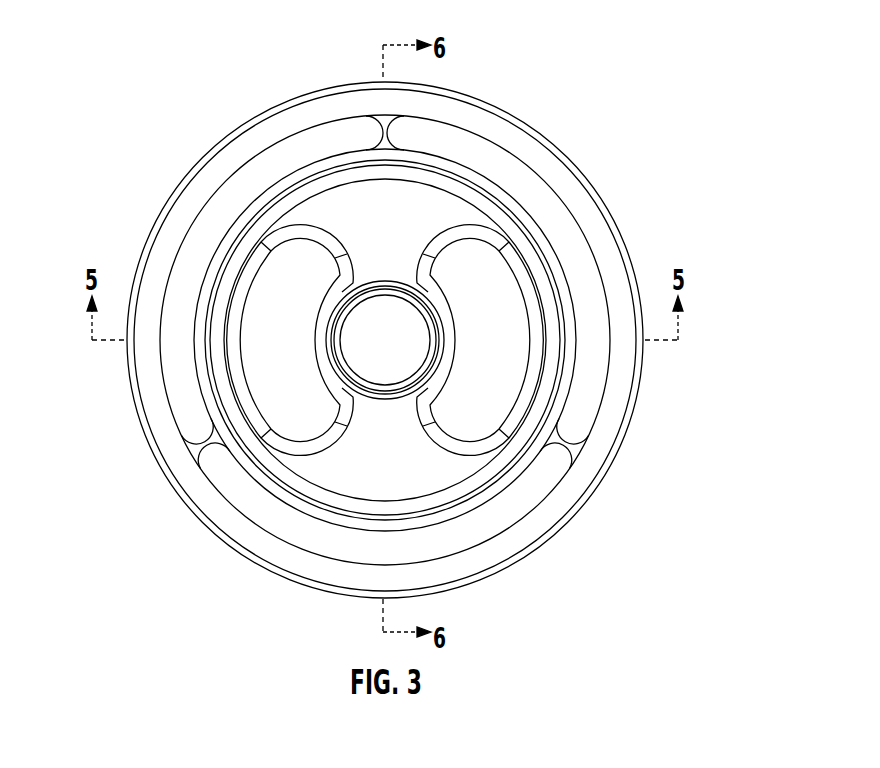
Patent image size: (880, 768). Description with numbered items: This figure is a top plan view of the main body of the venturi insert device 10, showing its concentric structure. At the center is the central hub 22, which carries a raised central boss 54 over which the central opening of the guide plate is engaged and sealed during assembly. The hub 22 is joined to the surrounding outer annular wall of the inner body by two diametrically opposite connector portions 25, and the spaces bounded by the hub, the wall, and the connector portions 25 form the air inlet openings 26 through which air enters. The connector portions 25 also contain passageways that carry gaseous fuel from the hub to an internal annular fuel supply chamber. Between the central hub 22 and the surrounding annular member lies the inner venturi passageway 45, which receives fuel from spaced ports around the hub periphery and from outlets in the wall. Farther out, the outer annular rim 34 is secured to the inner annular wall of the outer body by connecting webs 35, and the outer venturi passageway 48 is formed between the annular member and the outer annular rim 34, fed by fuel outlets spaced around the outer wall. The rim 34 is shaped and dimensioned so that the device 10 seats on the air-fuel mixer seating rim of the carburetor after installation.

The venturi device 10 is at (123, 53).
The central hub 22 is at (443, 318).
The connector portions 25 is at (388, 253).
The air inlet openings 26 is at (250, 387).
The outer annular rim 34 is at (612, 423).
The connecting webs 35 is at (576, 448).
The inner venturi passageway 45 is at (288, 281).
The outer venturi passageway 48 is at (487, 150).
The raised central boss 54 is at (382, 367).